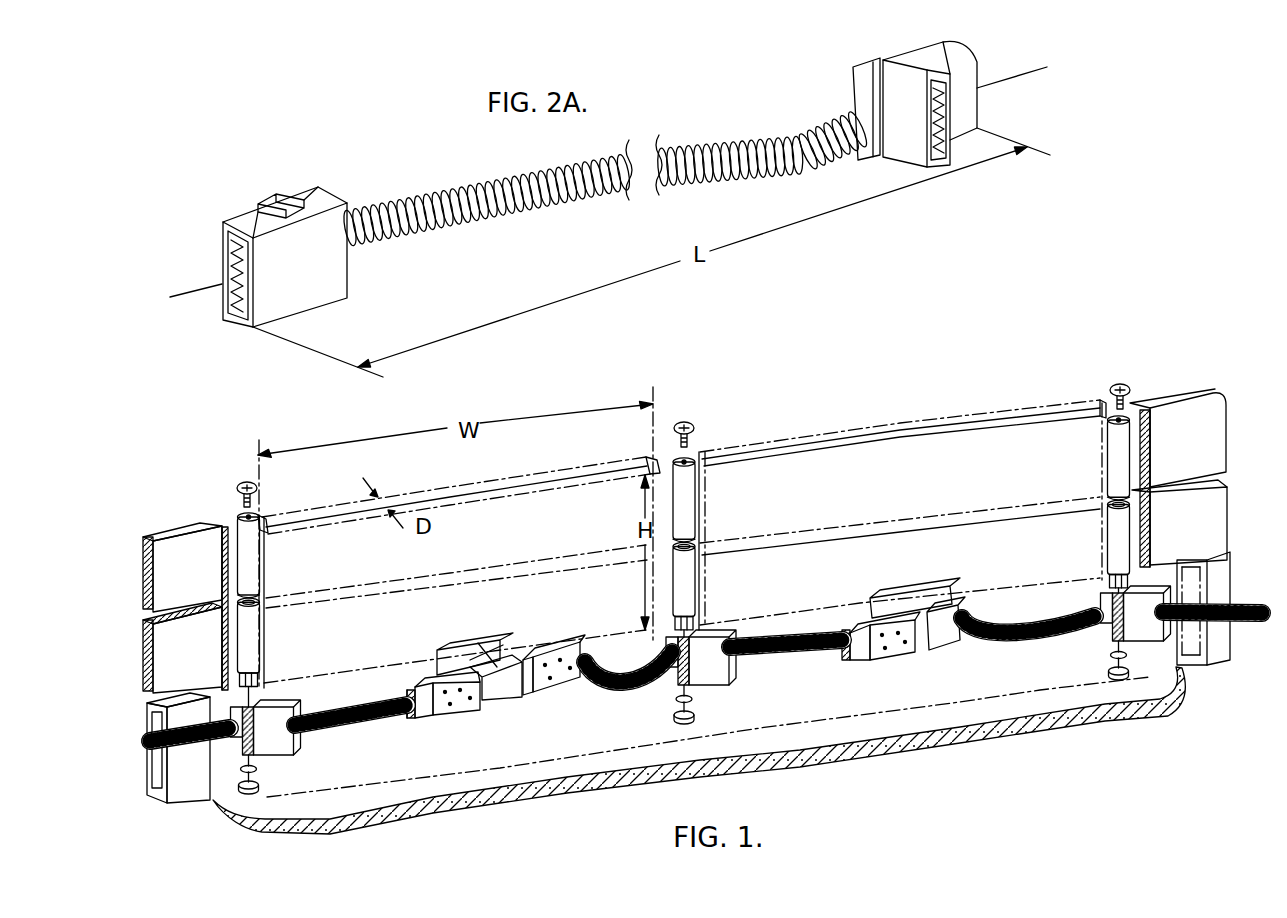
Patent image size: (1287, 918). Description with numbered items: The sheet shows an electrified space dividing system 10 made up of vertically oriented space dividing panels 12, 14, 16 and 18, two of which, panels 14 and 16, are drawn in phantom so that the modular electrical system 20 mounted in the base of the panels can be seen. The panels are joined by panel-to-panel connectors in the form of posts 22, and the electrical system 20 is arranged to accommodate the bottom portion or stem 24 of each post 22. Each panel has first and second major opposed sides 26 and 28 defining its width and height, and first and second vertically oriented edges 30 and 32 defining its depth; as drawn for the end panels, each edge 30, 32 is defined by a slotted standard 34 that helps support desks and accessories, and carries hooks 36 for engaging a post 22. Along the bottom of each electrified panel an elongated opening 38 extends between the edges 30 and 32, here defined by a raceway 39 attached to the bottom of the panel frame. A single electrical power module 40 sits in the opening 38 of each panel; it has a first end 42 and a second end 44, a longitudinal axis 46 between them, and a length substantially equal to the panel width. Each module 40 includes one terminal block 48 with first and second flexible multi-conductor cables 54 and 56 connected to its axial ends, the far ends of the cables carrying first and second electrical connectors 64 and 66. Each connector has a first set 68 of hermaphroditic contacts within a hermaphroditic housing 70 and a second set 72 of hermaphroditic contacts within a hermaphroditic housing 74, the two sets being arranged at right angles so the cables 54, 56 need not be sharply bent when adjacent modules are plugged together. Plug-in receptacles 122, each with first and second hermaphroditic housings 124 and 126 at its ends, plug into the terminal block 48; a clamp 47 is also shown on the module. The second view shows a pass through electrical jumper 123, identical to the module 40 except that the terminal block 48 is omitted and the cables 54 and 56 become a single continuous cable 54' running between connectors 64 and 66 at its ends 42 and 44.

In FIG. 1, the electrified space dividing system 10 is at (822, 400).
In FIG. 1, the space dividing panel 12 is at (180, 527).
In FIG. 1, the space dividing panel 14 is at (463, 483).
In FIG. 1, the space dividing panel 16 is at (931, 424).
In FIG. 1, the space dividing panel 18 is at (1181, 389).
In FIG. 1, the modular electrical system 20 is at (605, 739).
In FIG. 1, the post 22 is at (253, 547).
In FIG. 1, the stem 24 is at (258, 687).
In FIG. 1, the first major side 26 is at (197, 540).
In FIG. 1, the second major side 28 is at (143, 567).
In FIG. 1, the first vertically oriented edge 30 is at (258, 520).
In FIG. 1, the second vertically oriented edge 32 is at (227, 518).
In FIG. 1, the slotted standard 34 is at (223, 572).
In FIG. 1, the hook 36 is at (227, 527).
In FIG. 1, the elongated opening 38 is at (157, 780).
In FIG. 1, the raceway 39 is at (180, 787).
In FIG. 1, the electrical power module 40 is at (530, 631).
In FIG. 2A, the first end 42 is at (238, 329).
In FIG. 2A, the second end 44 is at (977, 94).
In FIG. 2A, the longitudinal axis 46 is at (207, 290).
In FIG. 1, the clamp 47 is at (940, 640).
In FIG. 1, the terminal block 48 is at (506, 688).
In FIG. 1, the first flexible multi-conductor cable 54 is at (778, 679).
In FIG. 2A, the single cable 54' is at (606, 178).
In FIG. 1, the second flexible multi-conductor cable 56 is at (640, 688).
In FIG. 2A, the first electrical connector 64 is at (338, 172).
In FIG. 1, the first electrical connector 64 is at (280, 742).
In FIG. 2A, the second electrical connector 66 is at (870, 58).
In FIG. 1, the second electrical connector 66 is at (233, 707).
In FIG. 2A, the first set of hermaphroditic contacts 68 is at (226, 244).
In FIG. 2A, the hermaphroditic housing 70 is at (293, 297).
In FIG. 2A, the second set of hermaphroditic contacts 72 is at (940, 103).
In FIG. 2A, the hermaphroditic housing 74 is at (288, 196).
In FIG. 1, the plug-in receptacle 122 is at (451, 716).
In FIG. 2A, the pass through electrical jumper 123 is at (500, 249).
In FIG. 1, the first hermaphroditic housing 124 is at (420, 727).
In FIG. 1, the second hermaphroditic housing 126 is at (605, 612).